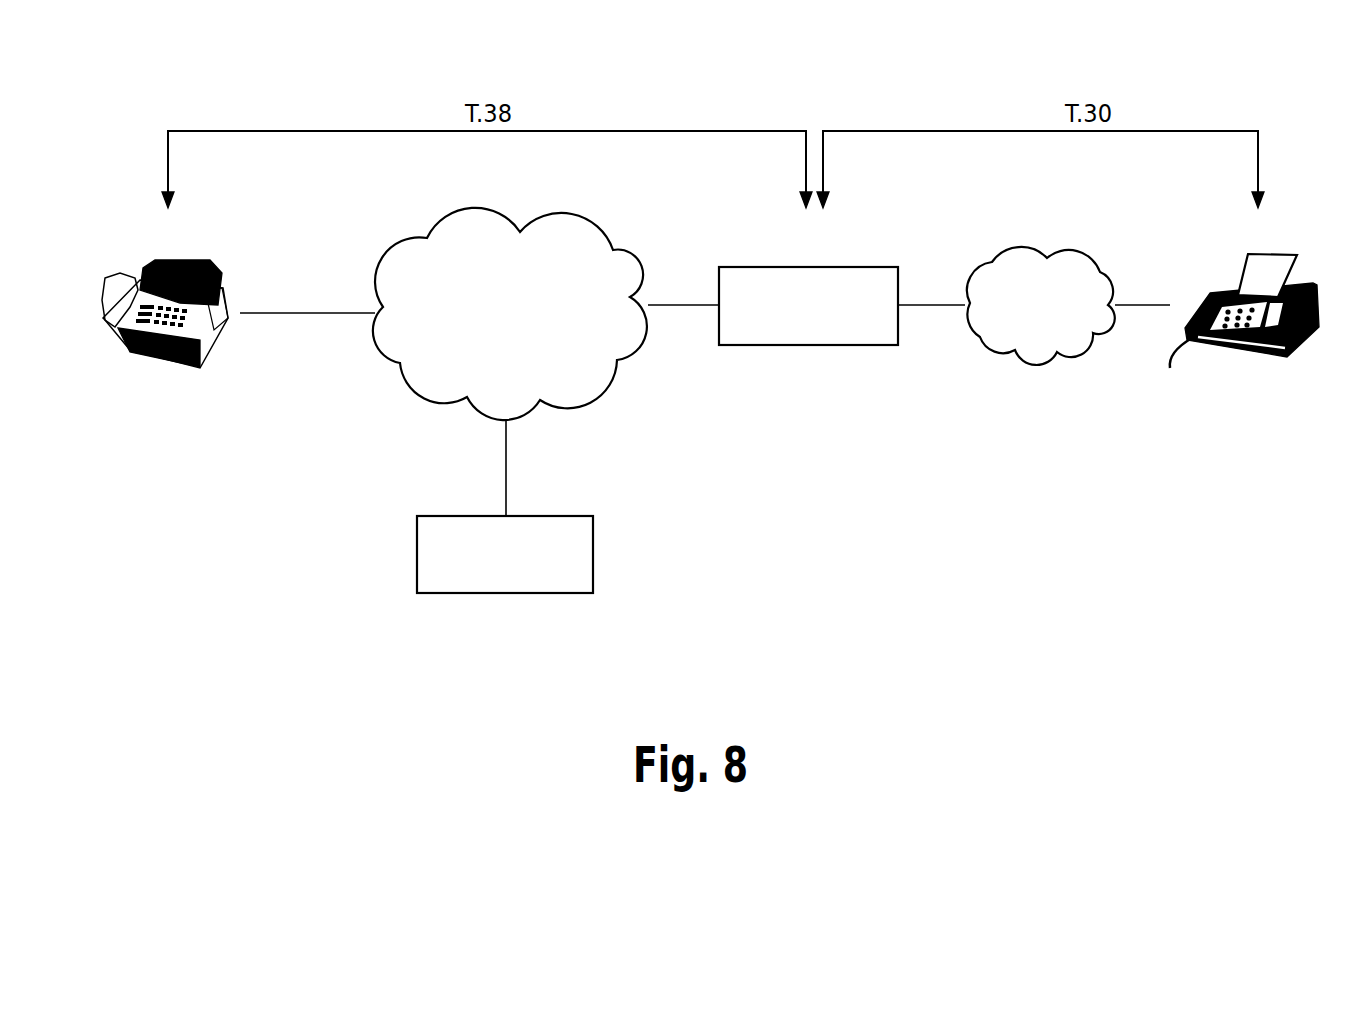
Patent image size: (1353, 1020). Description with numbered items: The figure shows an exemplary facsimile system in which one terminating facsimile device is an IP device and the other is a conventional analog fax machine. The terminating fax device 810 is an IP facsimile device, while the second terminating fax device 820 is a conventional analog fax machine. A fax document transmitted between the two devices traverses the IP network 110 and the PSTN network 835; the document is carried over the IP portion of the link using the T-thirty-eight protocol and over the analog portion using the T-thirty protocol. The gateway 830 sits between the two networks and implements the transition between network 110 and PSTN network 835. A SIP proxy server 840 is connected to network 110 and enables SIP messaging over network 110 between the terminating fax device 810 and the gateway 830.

The terminating fax device 810 is at (205, 373).
The network 110 is at (607, 392).
The gateway 830 is at (898, 345).
The PSTN network 835 is at (1093, 352).
The second terminating fax device 820 is at (1287, 357).
The SIP proxy server 840 is at (593, 586).